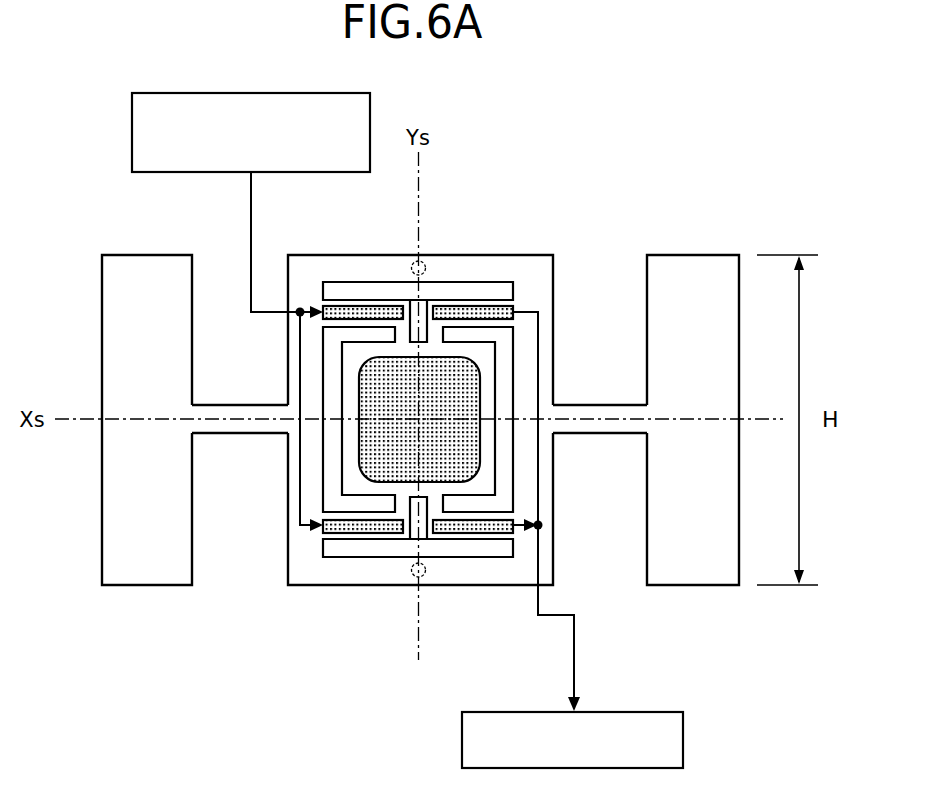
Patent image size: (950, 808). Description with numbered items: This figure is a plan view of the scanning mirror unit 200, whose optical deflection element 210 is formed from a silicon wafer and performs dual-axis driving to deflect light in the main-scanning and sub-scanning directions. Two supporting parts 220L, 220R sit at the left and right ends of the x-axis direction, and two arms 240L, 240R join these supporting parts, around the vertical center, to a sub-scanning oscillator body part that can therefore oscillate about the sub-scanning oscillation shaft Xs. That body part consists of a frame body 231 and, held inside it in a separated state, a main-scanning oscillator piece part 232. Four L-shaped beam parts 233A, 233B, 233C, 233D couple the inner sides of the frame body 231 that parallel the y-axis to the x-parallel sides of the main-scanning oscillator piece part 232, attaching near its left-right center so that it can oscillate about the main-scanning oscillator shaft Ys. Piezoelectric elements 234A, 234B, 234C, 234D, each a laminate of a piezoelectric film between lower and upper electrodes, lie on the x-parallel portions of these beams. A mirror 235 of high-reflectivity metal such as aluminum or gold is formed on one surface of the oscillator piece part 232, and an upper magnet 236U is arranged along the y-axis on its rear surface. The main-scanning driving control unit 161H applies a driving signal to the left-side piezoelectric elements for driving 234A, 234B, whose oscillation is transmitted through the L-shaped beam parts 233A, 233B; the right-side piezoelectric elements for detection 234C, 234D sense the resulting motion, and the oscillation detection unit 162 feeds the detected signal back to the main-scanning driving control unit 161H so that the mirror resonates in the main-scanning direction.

The main-scanning driving control unit 161H is at (217, 92).
The oscillation detection unit 162 is at (620, 710).
The scanning mirror unit 200 is at (568, 103).
The optical deflection element 210 is at (614, 162).
The supporting part 220L is at (150, 255).
The supporting part 220R is at (695, 255).
The arm 240L is at (243, 415).
The arm 240R is at (598, 417).
The frame body 231 is at (306, 547).
The main-scanning oscillator piece part 232 is at (352, 450).
The L-shaped beam part 233A is at (335, 297).
The L-shaped beam part 233B is at (343, 540).
The L-shaped beam part 233C is at (500, 296).
The L-shaped beam part 233D is at (494, 540).
The piezoelectric element for driving 234A is at (375, 313).
The piezoelectric element for driving 234B is at (335, 530).
The piezoelectric element for detection 234C is at (500, 312).
The piezoelectric element for detection 234D is at (502, 530).
The mirror 235 is at (467, 383).
The magnet 236U is at (424, 258).